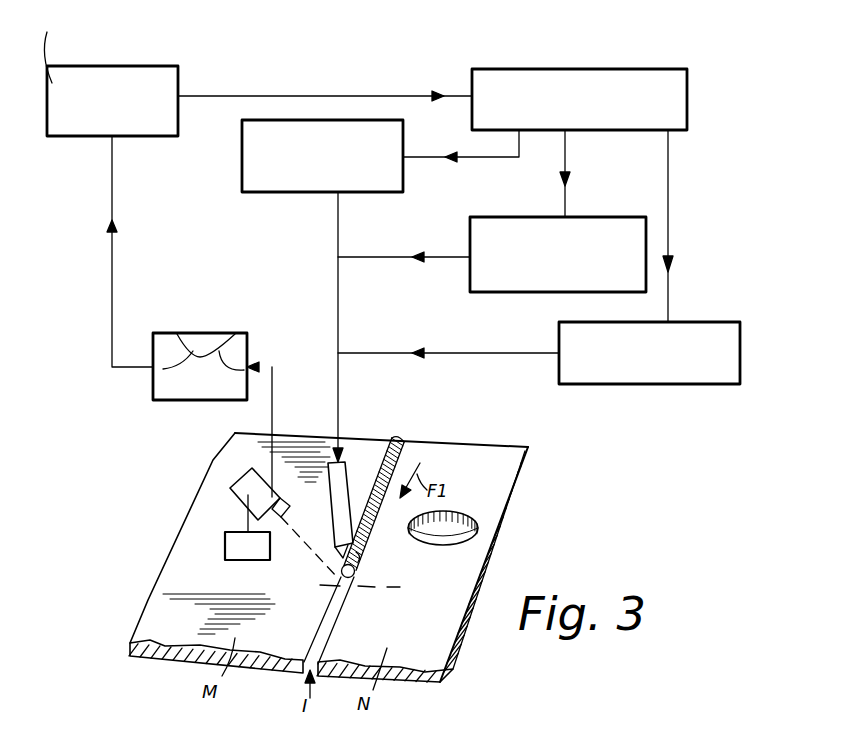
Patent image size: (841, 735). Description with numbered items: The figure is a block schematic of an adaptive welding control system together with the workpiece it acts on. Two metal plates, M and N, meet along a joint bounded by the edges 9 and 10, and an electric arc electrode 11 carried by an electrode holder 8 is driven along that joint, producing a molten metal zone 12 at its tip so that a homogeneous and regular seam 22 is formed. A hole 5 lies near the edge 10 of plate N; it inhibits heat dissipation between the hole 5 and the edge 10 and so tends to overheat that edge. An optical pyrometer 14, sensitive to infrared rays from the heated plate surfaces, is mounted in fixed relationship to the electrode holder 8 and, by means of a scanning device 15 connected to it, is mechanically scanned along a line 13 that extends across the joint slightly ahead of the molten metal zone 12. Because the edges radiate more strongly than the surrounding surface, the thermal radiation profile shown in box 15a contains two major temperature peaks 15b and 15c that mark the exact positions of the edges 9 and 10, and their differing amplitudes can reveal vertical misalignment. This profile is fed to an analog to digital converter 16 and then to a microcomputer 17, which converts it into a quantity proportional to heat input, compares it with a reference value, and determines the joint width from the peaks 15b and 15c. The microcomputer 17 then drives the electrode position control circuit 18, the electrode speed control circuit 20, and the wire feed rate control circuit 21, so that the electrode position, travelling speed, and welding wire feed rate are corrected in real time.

The hole 5 is at (470, 515).
The electrode holder 8 is at (338, 500).
The edge 9 is at (316, 640).
The edge 10 is at (338, 620).
The electric arc electrode 11 is at (362, 552).
The molten metal zone 12 is at (355, 572).
The scanning line 13 is at (313, 594).
The optical pyrometer 14 is at (238, 486).
The scanning device 15 is at (225, 545).
The box 15a is at (185, 386).
The temperature peak 15b is at (232, 336).
The temperature peak 15c is at (180, 336).
The analog to digital converter 16 is at (163, 124).
The microcomputer 17 is at (585, 82).
The electrode position control circuit 18 is at (305, 192).
The electrode speed control circuit 20 is at (500, 217).
The wire feed rate control circuit 21 is at (660, 380).
The seam 22 is at (402, 450).